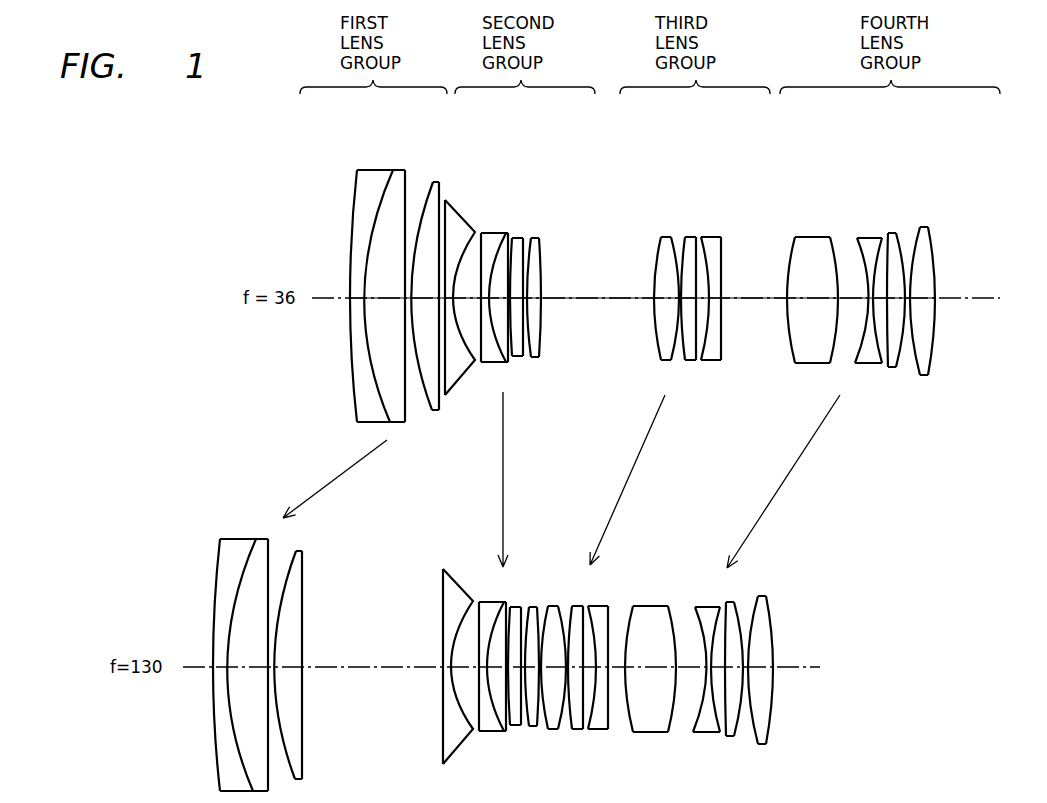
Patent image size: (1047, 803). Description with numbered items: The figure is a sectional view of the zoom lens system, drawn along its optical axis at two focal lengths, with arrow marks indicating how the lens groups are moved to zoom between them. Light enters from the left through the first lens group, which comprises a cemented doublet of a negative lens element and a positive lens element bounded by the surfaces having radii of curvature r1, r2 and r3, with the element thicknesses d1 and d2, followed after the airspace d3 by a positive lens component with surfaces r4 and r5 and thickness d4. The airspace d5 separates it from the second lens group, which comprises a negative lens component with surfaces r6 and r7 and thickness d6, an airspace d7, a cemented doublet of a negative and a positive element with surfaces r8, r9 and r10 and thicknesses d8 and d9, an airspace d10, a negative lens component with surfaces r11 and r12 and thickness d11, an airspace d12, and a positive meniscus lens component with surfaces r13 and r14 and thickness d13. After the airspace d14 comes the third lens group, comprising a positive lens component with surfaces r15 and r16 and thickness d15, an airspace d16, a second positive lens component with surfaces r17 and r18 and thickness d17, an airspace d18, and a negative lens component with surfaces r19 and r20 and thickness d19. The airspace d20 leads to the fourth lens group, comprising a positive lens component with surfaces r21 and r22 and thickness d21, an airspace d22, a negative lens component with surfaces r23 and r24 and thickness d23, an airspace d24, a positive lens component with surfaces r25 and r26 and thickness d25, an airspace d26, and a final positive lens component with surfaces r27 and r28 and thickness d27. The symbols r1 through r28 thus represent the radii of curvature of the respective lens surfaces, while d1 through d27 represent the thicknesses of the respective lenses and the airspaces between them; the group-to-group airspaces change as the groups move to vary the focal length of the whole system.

The radius of curvature of first lens surface r1 is at (353, 214).
The radius of curvature of second lens surface r2 is at (378, 230).
The radius of curvature of third lens surface r3 is at (405, 230).
The radius of curvature of fourth lens surface r4 is at (421, 240).
The radius of curvature of fifth lens surface r5 is at (439, 230).
The radius of curvature of sixth lens surface r6 is at (445, 260).
The radius of curvature of seventh lens surface r7 is at (457, 260).
The radius of curvature of eighth lens surface r8 is at (481, 245).
The radius of curvature of ninth lens surface r9 is at (497, 250).
The radius of curvature of tenth lens surface r10 is at (508, 250).
The radius of curvature of eleventh lens surface r11 is at (511, 250).
The radius of curvature of twelfth lens surface r12 is at (523, 250).
The radius of curvature of thirteenth lens surface r13 is at (528, 260).
The radius of curvature of fourteenth lens surface r14 is at (540, 265).
The radius of curvature of fifteenth lens surface r15 is at (657, 260).
The radius of curvature of sixteenth lens surface r16 is at (676, 260).
The radius of curvature of seventeenth lens surface r17 is at (683, 250).
The radius of curvature of eighteenth lens surface r18 is at (696, 245).
The radius of curvature of nineteenth lens surface r19 is at (705, 250).
The radius of curvature of twentieth lens surface r20 is at (721, 250).
The radius of curvature of twenty-first lens surface r21 is at (791, 260).
The radius of curvature of twenty-second lens surface r22 is at (834, 250).
The radius of curvature of twenty-third lens surface r23 is at (862, 255).
The radius of curvature of twenty-fourth lens surface r24 is at (879, 250).
The radius of curvature of twenty-fifth lens surface r25 is at (888, 245).
The radius of curvature of twenty-sixth lens surface r26 is at (900, 245).
The radius of curvature of twenty-seventh lens surface r27 is at (916, 245).
The radius of curvature of twenty-eighth lens surface r28 is at (930, 245).
The lens thickness d1 is at (353, 290).
The lens thickness d2 is at (372, 304).
The airspace d3 is at (405, 296).
The lens thickness d4 is at (418, 300).
The airspace d5 is at (442, 300).
The lens thickness d6 is at (447, 380).
The airspace d7 is at (470, 330).
The lens thickness d8 is at (486, 365).
The lens thickness d9 is at (500, 365).
The airspace d10 is at (516, 300).
The lens thickness d11 is at (524, 360).
The airspace d12 is at (526, 365).
The lens thickness d13 is at (533, 305).
The airspace d14 is at (600, 303).
The lens thickness d15 is at (662, 292).
The airspace d16 is at (680, 300).
The lens thickness d17 is at (689, 365).
The airspace d18 is at (703, 362).
The lens thickness d19 is at (715, 362).
The airspace d20 is at (750, 300).
The lens thickness d21 is at (808, 365).
The airspace d22 is at (852, 302).
The lens thickness d23 is at (872, 365).
The airspace d24 is at (884, 370).
The lens thickness d25 is at (896, 300).
The airspace d26 is at (908, 302).
The lens thickness d27 is at (922, 300).